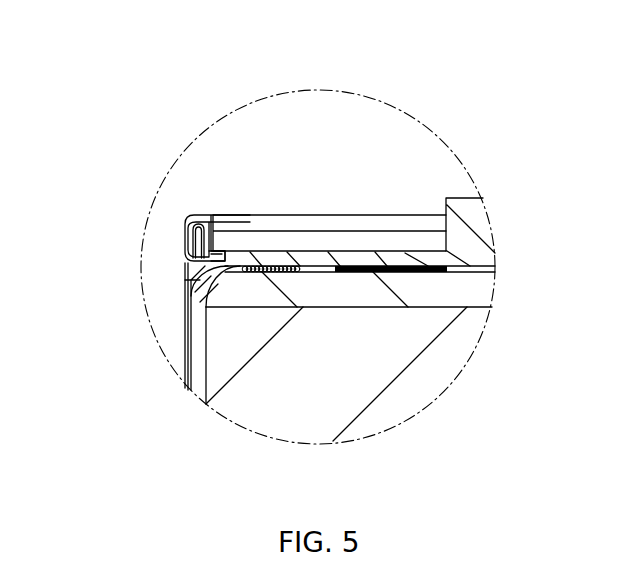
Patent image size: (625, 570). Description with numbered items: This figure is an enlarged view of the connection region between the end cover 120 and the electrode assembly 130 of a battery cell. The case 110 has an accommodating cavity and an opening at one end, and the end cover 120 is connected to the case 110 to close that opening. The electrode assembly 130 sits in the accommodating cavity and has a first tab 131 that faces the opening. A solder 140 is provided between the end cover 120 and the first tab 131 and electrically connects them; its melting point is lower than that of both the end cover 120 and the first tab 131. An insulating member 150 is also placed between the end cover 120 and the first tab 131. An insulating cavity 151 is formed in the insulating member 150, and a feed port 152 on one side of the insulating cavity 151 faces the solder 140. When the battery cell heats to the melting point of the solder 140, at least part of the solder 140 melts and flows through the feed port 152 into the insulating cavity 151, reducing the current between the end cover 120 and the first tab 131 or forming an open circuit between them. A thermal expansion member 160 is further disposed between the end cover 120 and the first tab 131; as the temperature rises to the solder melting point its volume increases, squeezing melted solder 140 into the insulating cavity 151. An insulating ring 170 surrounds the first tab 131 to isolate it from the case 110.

The case 110 is at (185, 338).
The end cover 120 is at (380, 240).
The electrode assembly 130 is at (417, 348).
The first tab 131 is at (438, 292).
The solder 140 is at (408, 266).
The insulating member 150 is at (232, 265).
The insulating cavity 151 is at (260, 266).
The feed port 152 is at (300, 266).
The thermal expansion member 160 is at (284, 266).
The insulating ring 170 is at (185, 291).